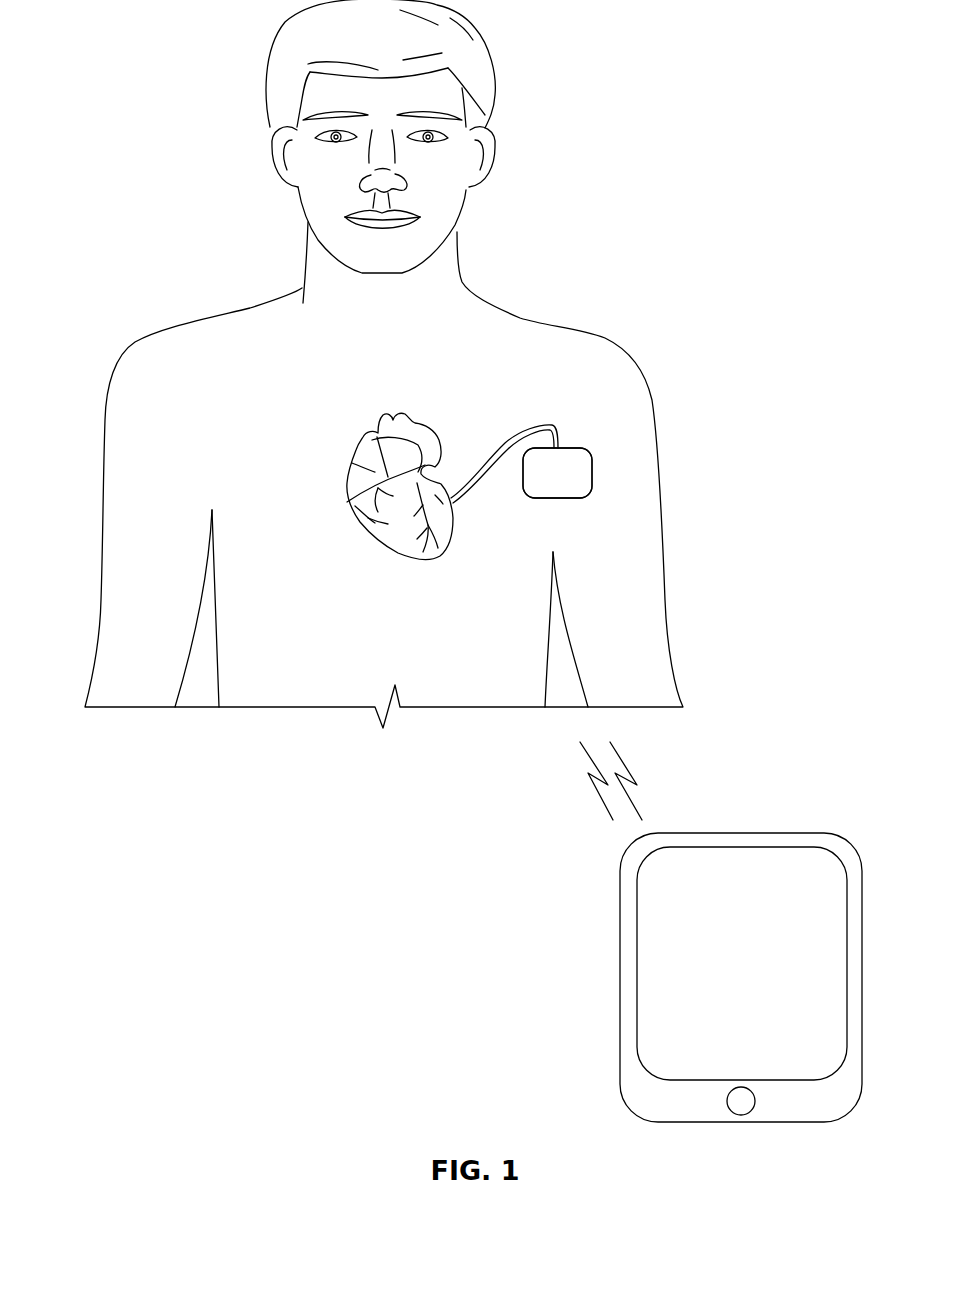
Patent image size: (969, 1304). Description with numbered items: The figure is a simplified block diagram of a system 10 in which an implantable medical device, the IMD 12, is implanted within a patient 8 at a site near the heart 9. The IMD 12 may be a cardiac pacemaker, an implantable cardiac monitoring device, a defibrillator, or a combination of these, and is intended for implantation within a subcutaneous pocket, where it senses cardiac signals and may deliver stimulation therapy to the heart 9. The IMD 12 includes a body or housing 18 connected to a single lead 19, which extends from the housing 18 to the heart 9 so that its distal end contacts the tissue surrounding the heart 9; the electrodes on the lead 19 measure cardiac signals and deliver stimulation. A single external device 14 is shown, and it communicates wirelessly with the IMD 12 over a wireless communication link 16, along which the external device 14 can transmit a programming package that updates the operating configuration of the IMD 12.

The system 10 is at (690, 66).
The patient 8 is at (530, 320).
The heart 9 is at (397, 550).
The lead 19 is at (512, 432).
The IMD 12 is at (560, 498).
The housing 18 is at (572, 449).
The wireless communication link 16 is at (600, 800).
The external device 14 is at (740, 832).